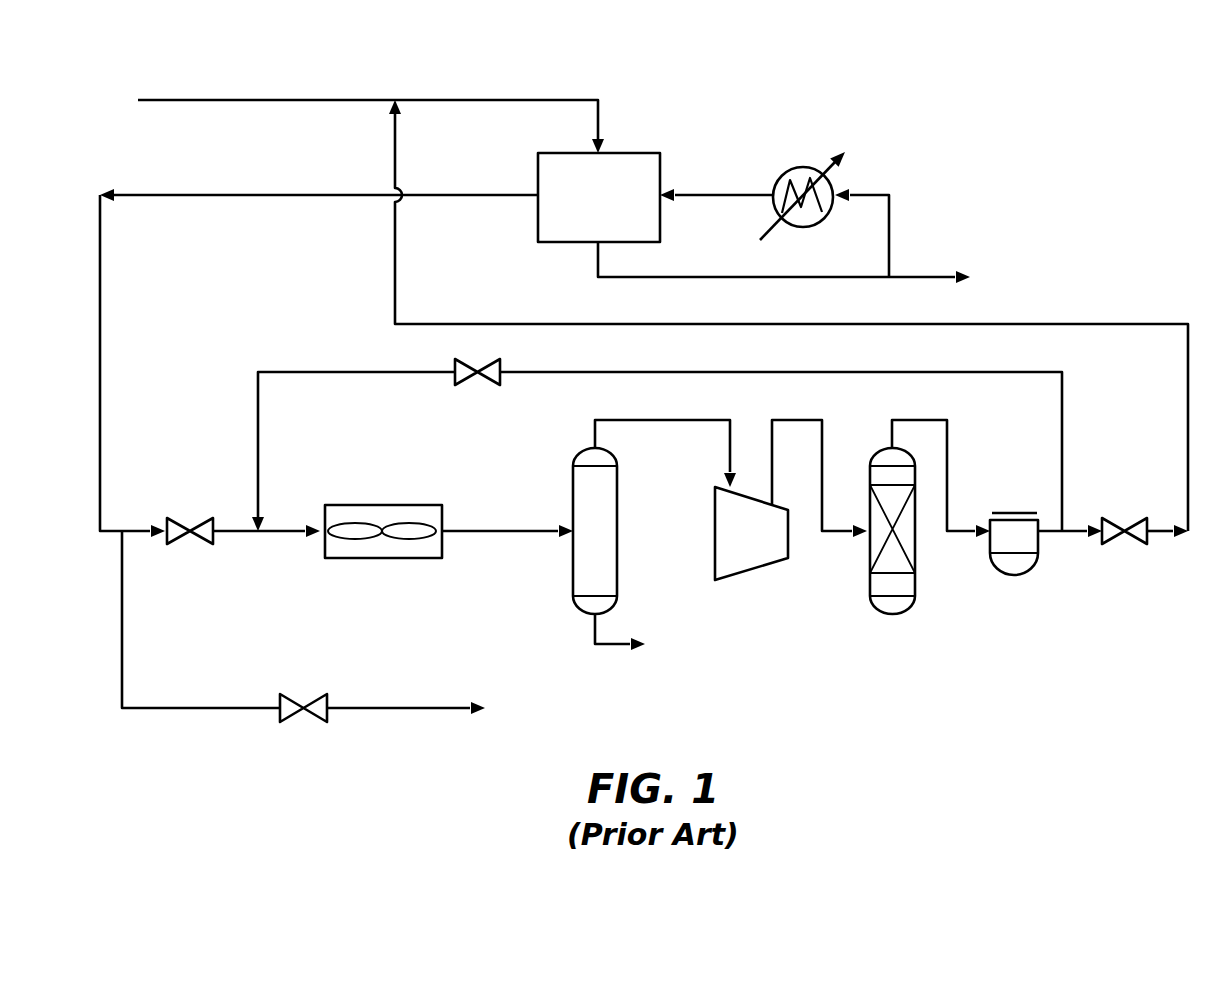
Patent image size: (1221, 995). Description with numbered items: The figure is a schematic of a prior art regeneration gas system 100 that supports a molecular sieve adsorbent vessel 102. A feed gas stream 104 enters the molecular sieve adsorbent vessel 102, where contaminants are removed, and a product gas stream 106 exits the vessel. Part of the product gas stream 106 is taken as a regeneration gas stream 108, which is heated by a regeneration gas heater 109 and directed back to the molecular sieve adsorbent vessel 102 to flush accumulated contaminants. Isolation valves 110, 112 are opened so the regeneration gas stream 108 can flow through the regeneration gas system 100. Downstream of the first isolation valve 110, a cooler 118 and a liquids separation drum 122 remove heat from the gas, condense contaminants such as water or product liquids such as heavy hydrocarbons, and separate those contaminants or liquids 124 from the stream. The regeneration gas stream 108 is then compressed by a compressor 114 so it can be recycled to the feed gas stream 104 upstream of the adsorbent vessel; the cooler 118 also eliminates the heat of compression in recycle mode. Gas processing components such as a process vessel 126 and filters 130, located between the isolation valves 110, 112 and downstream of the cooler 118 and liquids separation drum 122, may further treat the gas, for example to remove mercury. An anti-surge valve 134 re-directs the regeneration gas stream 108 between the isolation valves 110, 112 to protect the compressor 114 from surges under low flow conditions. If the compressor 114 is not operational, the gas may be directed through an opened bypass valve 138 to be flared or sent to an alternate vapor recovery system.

The regeneration gas system 100 is at (1133, 70).
The molecular sieve adsorbent vessel 102 is at (683, 153).
The feed gas stream 104 is at (234, 100).
The product gas stream 106 is at (669, 279).
The regeneration gas stream 108 is at (920, 222).
The regeneration gas heater 109 is at (784, 172).
The isolation valve 110 is at (200, 524).
The isolation valve 112 is at (1140, 543).
The compressor 114 is at (752, 565).
The cooler 118 is at (410, 505).
The liquids separation drum 122 is at (645, 490).
The contaminants or liquids 124 is at (611, 650).
The process vessel 126 is at (917, 580).
The filters 130 is at (1024, 573).
The anti-surge valve 134 is at (470, 382).
The bypass valve 138 is at (316, 698).